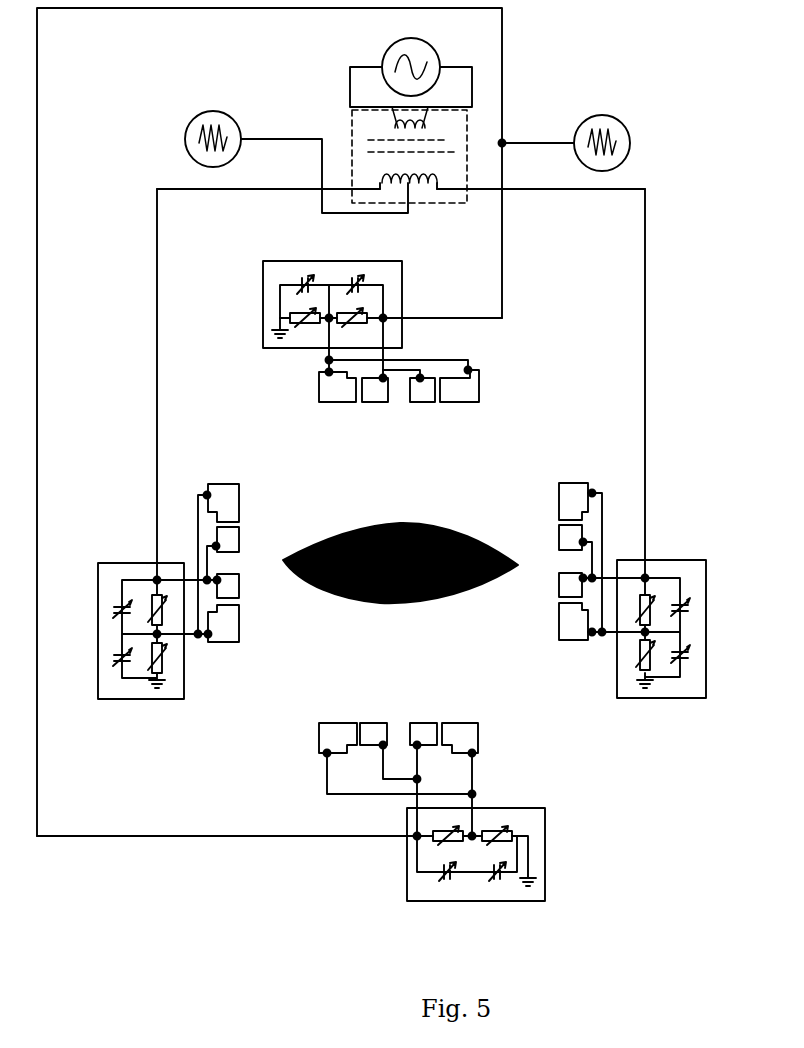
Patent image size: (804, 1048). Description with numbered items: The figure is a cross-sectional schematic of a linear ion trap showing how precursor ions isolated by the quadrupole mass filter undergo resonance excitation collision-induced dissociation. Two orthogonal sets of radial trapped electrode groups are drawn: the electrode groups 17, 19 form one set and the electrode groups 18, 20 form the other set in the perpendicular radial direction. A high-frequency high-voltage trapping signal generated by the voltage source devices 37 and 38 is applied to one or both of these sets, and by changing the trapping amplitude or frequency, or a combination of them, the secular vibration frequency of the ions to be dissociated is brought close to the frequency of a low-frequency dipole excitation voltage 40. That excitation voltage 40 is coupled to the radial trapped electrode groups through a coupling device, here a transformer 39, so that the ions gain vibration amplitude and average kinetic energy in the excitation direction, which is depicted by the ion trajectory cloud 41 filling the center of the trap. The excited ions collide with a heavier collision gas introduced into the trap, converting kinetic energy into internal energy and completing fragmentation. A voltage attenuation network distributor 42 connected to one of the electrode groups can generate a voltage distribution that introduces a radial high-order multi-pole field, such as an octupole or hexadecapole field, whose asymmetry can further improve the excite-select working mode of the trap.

The radial trapped electrode group 17 is at (319, 386).
The radial trapped electrode group 18 is at (562, 642).
The radial trapped electrode group 19 is at (478, 738).
The radial trapped electrode group 20 is at (232, 643).
The voltage source device 37 is at (213, 112).
The voltage source device 38 is at (609, 116).
The transformer 39 is at (351, 136).
The low-frequency dipole excitation voltage 40 is at (390, 48).
The ion trajectory cloud 41 is at (448, 530).
The voltage attenuation network distributor 42 is at (685, 698).